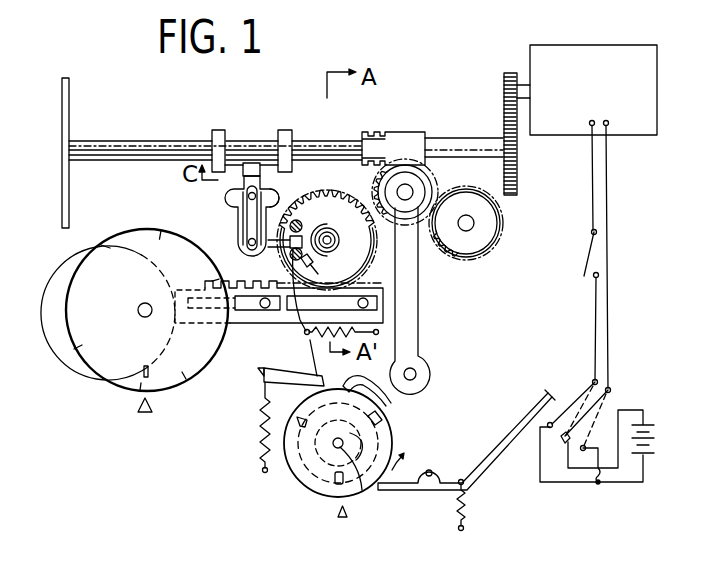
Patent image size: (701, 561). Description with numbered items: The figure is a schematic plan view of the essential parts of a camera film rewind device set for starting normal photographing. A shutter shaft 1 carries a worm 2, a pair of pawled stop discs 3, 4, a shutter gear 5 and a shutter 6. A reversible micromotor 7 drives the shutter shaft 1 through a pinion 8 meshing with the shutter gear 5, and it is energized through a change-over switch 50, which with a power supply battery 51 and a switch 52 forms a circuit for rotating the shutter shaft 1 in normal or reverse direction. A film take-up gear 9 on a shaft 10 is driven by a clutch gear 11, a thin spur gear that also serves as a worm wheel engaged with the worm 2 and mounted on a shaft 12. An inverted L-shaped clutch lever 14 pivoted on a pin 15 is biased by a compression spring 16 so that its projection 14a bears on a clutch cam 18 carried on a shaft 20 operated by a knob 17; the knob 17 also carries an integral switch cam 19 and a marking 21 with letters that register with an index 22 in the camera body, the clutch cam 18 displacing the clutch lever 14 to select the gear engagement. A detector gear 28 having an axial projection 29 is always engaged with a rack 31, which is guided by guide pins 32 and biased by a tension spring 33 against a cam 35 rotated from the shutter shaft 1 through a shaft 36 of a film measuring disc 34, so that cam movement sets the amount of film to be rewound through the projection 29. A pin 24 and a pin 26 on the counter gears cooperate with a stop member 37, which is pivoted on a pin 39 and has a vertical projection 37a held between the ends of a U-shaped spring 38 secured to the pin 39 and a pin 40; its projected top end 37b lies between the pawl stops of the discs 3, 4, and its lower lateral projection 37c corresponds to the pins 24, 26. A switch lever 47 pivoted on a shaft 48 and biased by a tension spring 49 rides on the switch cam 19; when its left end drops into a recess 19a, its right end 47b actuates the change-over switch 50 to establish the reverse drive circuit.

The shutter shaft 1 is at (122, 141).
The worm 2 is at (395, 142).
The pawled stop disc 3 is at (218, 130).
The pawled stop disc 4 is at (284, 130).
The shutter gear 5 is at (503, 125).
The shutter 6 is at (70, 98).
The micromotor 7 is at (565, 52).
The pinion 8 is at (503, 87).
The film take-up gear 9 is at (490, 240).
The shaft 10 is at (468, 225).
The clutch gear 11 is at (377, 184).
The shaft 12 is at (408, 191).
The clutch lever 14 is at (419, 300).
The projection 14a is at (380, 398).
The pin 15 is at (416, 371).
The compression spring 16 is at (258, 421).
The knob 17 is at (293, 455).
The clutch cam 18 is at (318, 484).
The switch cam 19 is at (357, 447).
The recess 19a is at (350, 432).
The shaft 20 is at (363, 492).
The marking 21 is at (334, 480).
The index 22 is at (342, 520).
The pin 24 is at (302, 226).
The pin 26 is at (309, 335).
The detector gear 28 is at (367, 250).
The projection 29 is at (308, 262).
The rack 31 is at (243, 323).
The guide pins 32 is at (266, 309).
The tension spring 33 is at (318, 383).
The film measuring disc 34 is at (135, 385).
The cam 35 is at (63, 348).
The shaft 36 is at (139, 313).
The stop member 37 is at (234, 200).
The projection 37a is at (275, 182).
The projected top end 37b is at (248, 163).
The lower lateral projection 37c is at (291, 250).
The U-shaped spring 38 is at (247, 227).
The pin 39 is at (248, 242).
The pin 40 is at (248, 196).
The switch lever 47 is at (440, 491).
The right end 47b is at (546, 392).
The shaft 48 is at (427, 478).
The tension spring 49 is at (465, 500).
The change-over switch 50 is at (573, 402).
The power supply battery 51 is at (655, 441).
The switch 52 is at (590, 258).